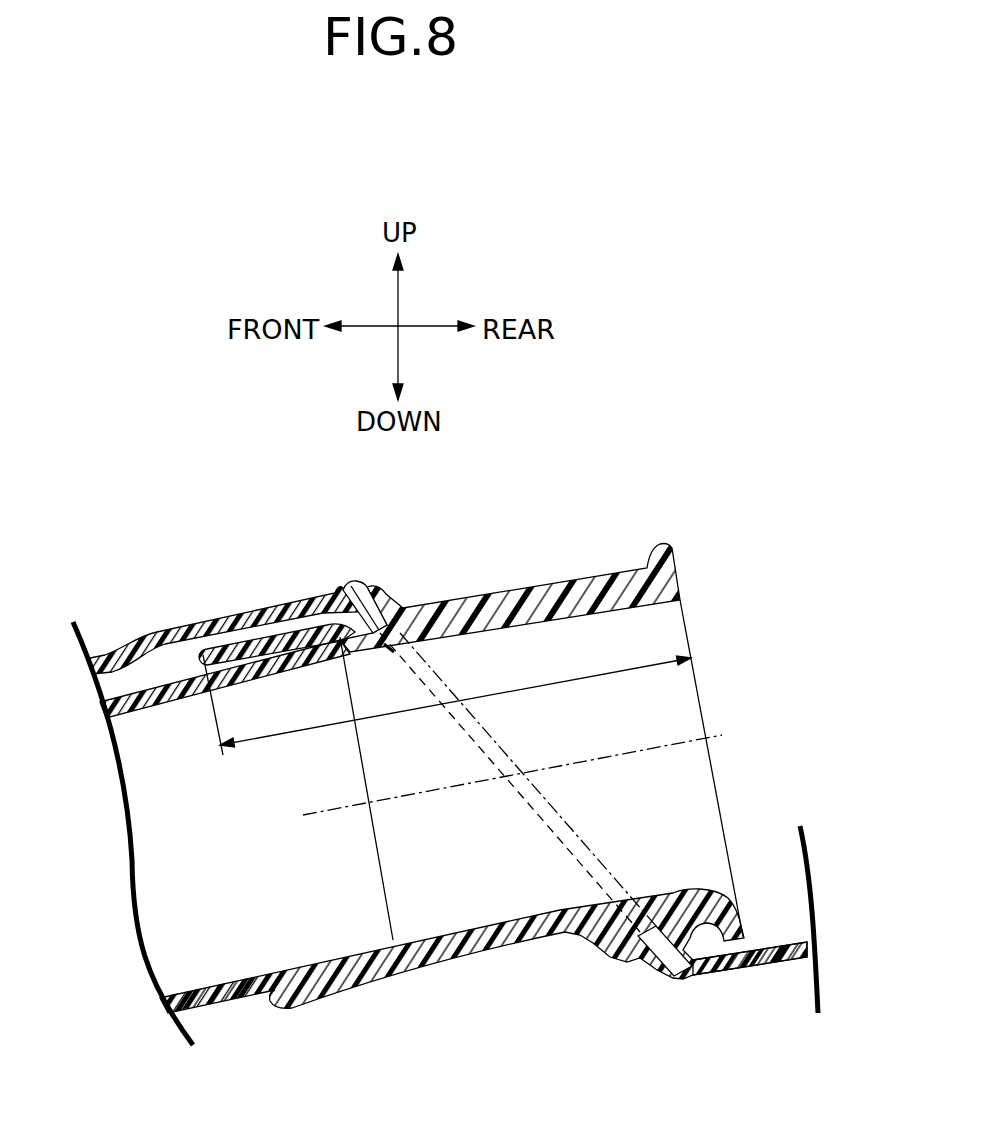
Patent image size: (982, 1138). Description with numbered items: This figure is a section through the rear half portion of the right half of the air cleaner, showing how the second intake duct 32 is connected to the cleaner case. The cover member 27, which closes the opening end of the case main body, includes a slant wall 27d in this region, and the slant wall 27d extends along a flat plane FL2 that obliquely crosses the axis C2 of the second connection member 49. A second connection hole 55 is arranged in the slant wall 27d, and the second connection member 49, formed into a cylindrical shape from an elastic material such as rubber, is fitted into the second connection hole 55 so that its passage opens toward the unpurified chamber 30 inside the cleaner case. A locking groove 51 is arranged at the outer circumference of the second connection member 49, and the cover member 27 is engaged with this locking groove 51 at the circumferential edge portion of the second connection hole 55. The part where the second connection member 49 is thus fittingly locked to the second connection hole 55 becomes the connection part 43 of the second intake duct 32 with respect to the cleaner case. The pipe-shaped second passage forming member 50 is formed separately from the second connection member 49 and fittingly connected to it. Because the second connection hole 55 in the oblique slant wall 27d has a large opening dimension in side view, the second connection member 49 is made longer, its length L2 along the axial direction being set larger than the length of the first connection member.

The cover member 27 is at (167, 630).
The slant wall 27d is at (540, 818).
The second intake duct 32 is at (590, 569).
The connection part 43 is at (365, 578).
The second connection hole 55 is at (395, 650).
The second connection member 49 is at (535, 933).
The second passage forming member 50 is at (233, 997).
The locking groove 51 is at (646, 930).
The unpurified chamber 30 is at (465, 1068).
The length of the second connection member L2 is at (387, 716).
The axis of the second connection member C2 is at (582, 760).
The flat plane FL2 is at (587, 851).